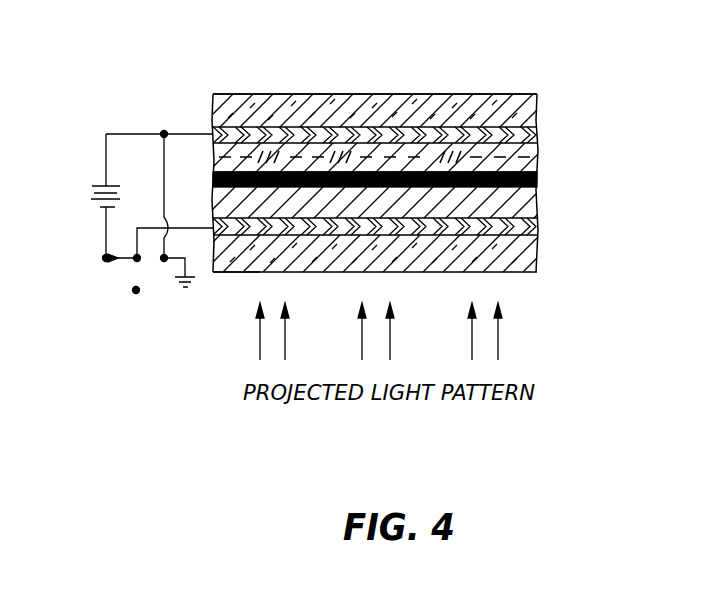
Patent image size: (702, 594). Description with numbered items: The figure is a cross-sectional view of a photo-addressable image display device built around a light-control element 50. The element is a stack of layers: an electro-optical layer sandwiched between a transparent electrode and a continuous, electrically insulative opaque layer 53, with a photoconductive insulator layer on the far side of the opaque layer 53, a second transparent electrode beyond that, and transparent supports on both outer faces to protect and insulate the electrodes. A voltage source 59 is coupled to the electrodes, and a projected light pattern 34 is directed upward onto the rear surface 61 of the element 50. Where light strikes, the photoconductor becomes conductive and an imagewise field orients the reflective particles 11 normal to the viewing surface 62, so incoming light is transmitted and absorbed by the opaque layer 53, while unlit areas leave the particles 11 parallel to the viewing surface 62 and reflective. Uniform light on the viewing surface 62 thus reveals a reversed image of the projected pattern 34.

The light-control element 50 is at (425, 71).
The viewing surface 62 is at (490, 93).
The stored image pattern 11 is at (326, 160).
The continuous opaque layer 53 is at (534, 177).
The voltage source 59 is at (85, 198).
The rear surface 61 is at (240, 273).
The projected light pattern 34 is at (390, 350).